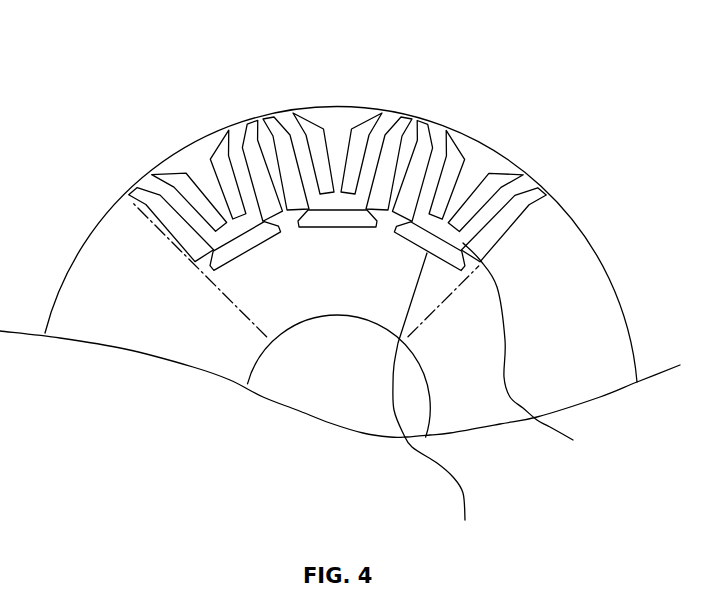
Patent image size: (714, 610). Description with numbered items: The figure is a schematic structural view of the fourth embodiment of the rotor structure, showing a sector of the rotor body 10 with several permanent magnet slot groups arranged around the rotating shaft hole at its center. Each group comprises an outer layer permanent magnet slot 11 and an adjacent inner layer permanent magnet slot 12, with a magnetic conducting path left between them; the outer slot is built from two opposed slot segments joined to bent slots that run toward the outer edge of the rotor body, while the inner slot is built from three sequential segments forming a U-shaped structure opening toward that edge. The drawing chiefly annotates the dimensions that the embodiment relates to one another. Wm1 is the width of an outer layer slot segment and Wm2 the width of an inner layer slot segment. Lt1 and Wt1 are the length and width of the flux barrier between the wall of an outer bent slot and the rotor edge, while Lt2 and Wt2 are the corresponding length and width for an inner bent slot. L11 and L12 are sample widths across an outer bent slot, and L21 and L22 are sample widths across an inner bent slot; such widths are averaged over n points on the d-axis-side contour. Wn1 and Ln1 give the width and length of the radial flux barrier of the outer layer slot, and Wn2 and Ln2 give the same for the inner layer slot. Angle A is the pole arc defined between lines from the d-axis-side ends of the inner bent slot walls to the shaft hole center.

The rotor body 10 is at (147, 312).
The outer layer permanent magnet slot 11 is at (532, 351).
The inner layer permanent magnet slot 12 is at (436, 402).
The width measurement of the third or fourth bent slot L21 is at (265, 125).
The width measurement of the third or fourth bent slot L22 is at (262, 76).
The width measurement of the first or second bent slot L11 is at (258, 108).
The width measurement of the first or second bent slot L12 is at (267, 130).
The width of the outer layer flux barrier Wt1 is at (343, 125).
The length of the outer layer flux barrier Lt1 is at (376, 113).
The length of the inner layer flux barrier Lt2 is at (401, 117).
The width of the inner layer flux barrier Wt2 is at (445, 146).
The width of the radial-oriented flux barrier of the outer layer permanent magnet sl Wn1 is at (471, 133).
The length of the radial flux barrier of the outer layer permanent magnet slot Ln1 is at (469, 191).
The width of the first or third inner layer permanent magnet slot segment Wm2 is at (143, 163).
The width of the first or second outer layer permanent magnet slot segment Wm1 is at (211, 181).
The pole arc angle A is at (100, 200).
The width of the radial-oriented flux barrier of the inner layer permanent magnet sl Wn2 is at (290, 214).
The length of the radial flux barrier of the inner layer permanent magnet slot Ln2 is at (308, 210).